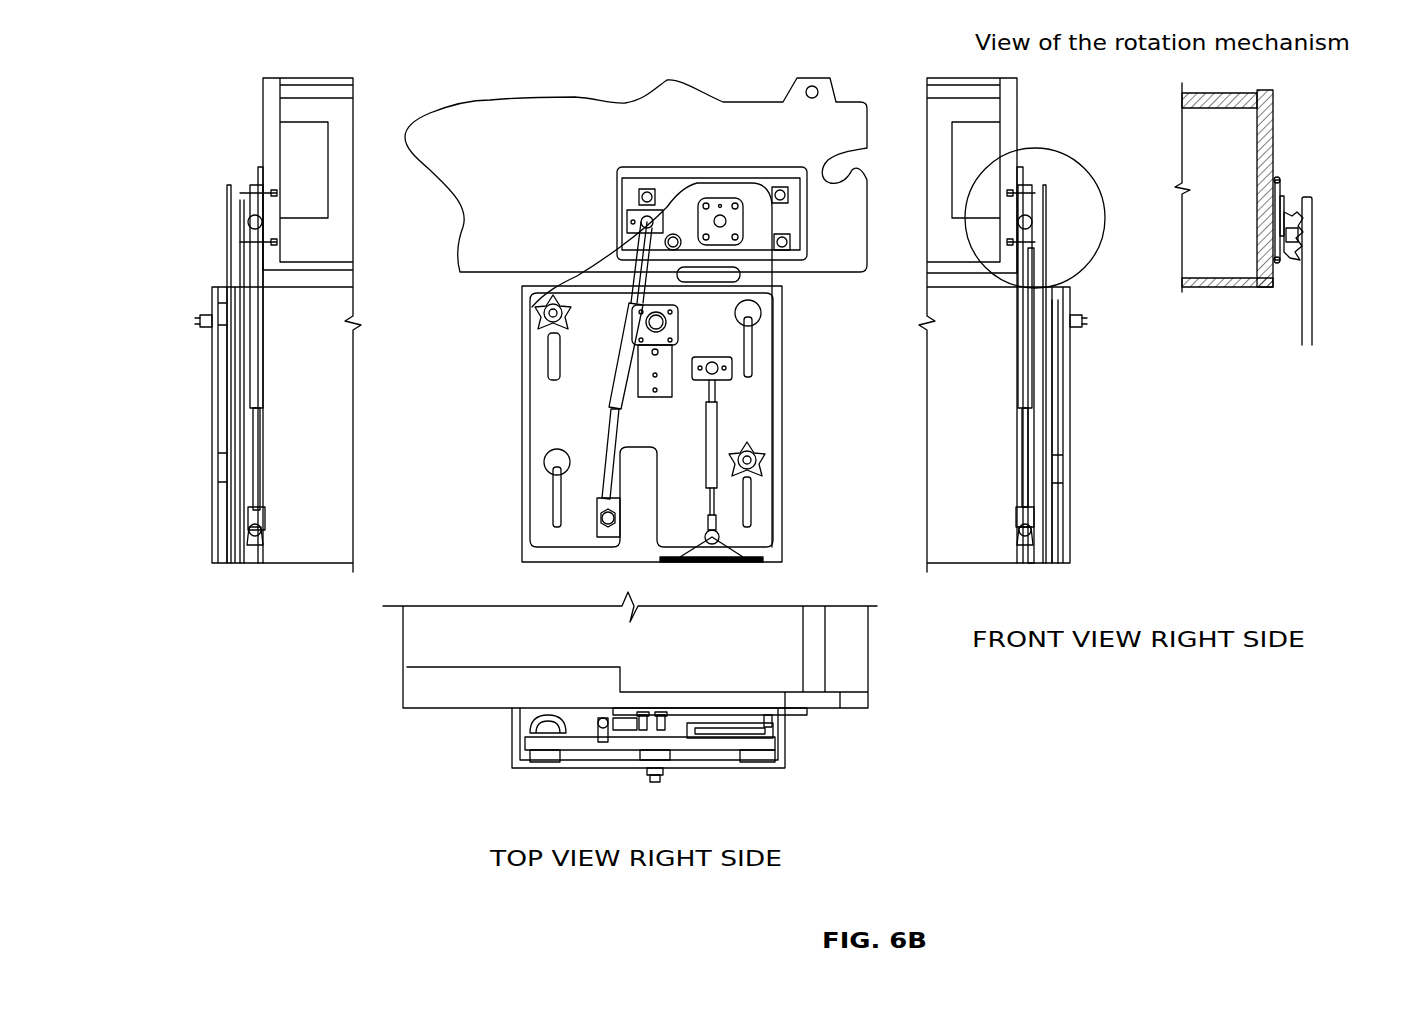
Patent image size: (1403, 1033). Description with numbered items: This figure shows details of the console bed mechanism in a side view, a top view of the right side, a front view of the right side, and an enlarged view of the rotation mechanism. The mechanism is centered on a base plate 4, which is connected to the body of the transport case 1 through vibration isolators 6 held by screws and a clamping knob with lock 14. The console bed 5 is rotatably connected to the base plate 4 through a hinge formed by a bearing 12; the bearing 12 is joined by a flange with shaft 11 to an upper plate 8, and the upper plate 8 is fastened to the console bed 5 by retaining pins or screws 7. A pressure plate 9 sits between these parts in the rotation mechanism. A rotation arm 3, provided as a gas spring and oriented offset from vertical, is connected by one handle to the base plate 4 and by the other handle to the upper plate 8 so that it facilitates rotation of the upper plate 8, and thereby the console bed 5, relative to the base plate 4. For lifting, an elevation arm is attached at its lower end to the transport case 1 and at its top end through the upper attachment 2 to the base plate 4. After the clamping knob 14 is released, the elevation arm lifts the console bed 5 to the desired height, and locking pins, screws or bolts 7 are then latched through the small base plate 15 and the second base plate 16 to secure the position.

The transport case 1 is at (527, 770).
The upper attachment 2 is at (600, 727).
The rotation arm 3 is at (1018, 365).
The base plate 4 is at (710, 740).
The console bed 5 is at (402, 697).
The vibration isolators 6 is at (547, 753).
The retaining pins or screws 7 is at (643, 717).
The upper plate 8 is at (1280, 203).
The pressure plate 9 is at (793, 717).
The flange with shaft 11 is at (730, 733).
The bearing 12 is at (757, 740).
The clamping knob with lock 14 is at (523, 725).
The small base plate 15 is at (643, 760).
The second base plate 16 is at (670, 753).